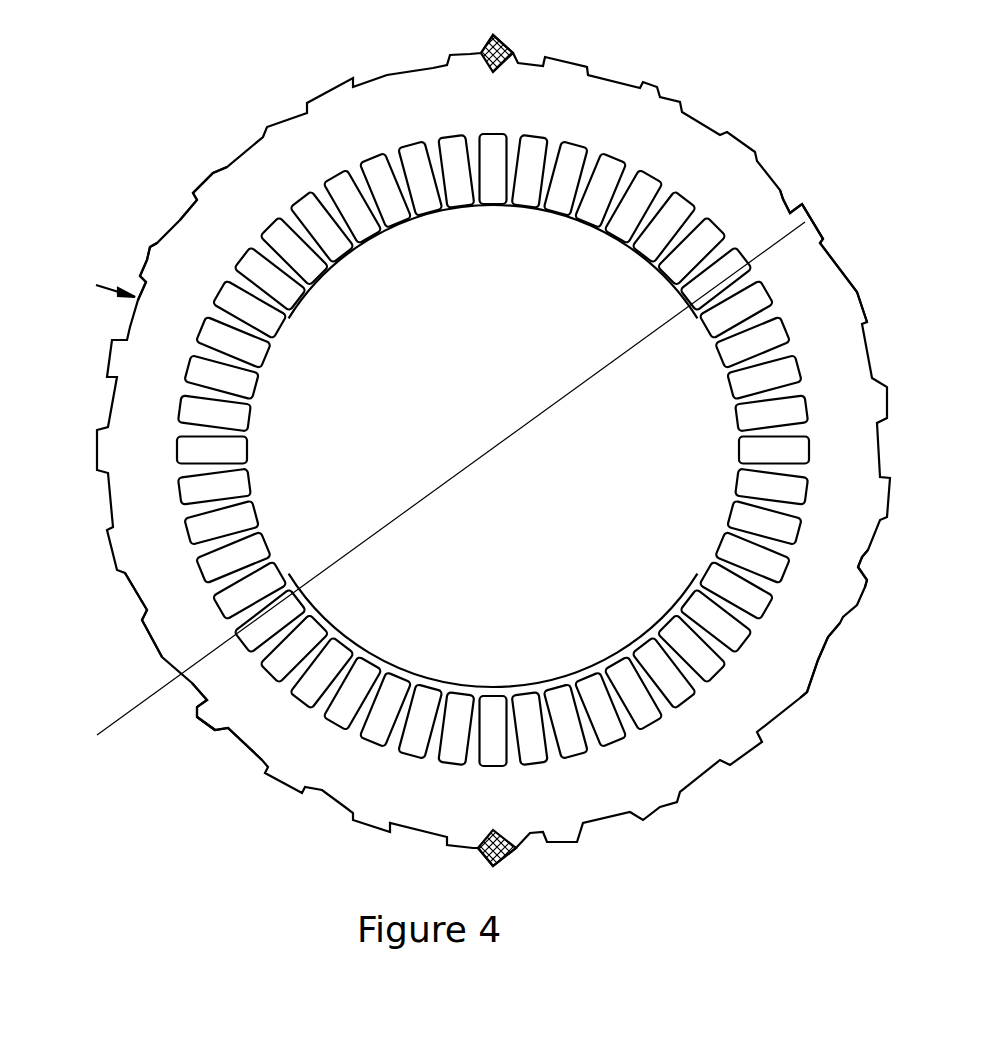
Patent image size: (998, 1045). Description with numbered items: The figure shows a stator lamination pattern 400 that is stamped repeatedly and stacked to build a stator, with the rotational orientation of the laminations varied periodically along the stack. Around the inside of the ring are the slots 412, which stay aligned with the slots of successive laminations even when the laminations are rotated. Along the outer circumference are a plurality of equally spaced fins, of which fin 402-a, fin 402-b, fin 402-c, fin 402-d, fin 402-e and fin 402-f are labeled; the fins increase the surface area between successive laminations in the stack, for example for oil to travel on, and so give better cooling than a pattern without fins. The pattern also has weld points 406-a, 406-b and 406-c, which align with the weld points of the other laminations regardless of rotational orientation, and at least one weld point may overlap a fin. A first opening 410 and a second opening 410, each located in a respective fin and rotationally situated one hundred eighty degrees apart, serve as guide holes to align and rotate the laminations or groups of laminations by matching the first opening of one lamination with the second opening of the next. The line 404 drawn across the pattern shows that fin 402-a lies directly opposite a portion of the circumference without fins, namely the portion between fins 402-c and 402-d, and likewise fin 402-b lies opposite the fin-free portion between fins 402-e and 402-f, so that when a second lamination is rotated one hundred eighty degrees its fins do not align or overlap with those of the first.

The stator lamination pattern 400 is at (173, 68).
The fin 402-a is at (823, 218).
The fin 402-b is at (815, 667).
The fin 402-c is at (217, 723).
The fin 402-d is at (140, 620).
The fin 402-e is at (145, 250).
The fin 402-f is at (212, 173).
The line 404 is at (507, 433).
The weld point 406-a is at (784, 194).
The weld point 406-b is at (863, 553).
The weld point 406-c is at (193, 685).
The opening 410 is at (498, 40).
The slots 412 is at (300, 272).